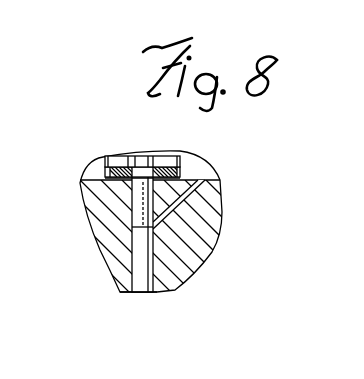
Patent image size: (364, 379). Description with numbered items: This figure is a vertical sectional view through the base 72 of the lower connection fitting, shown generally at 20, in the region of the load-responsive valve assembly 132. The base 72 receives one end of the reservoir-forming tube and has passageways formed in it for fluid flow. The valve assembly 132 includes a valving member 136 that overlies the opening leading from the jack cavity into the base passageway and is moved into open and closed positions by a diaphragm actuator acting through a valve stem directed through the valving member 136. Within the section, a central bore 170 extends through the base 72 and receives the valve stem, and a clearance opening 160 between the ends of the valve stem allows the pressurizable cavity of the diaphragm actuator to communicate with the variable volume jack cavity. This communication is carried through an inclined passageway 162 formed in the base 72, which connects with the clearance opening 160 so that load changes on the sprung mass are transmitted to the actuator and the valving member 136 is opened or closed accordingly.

The handle body 20 is at (87, 172).
The base 72 is at (207, 192).
The valve assembly 132 is at (185, 170).
The valving member 136 is at (106, 175).
The passageway 162 is at (186, 211).
The central bore 170 is at (137, 267).
The clearance opening 160 is at (158, 282).